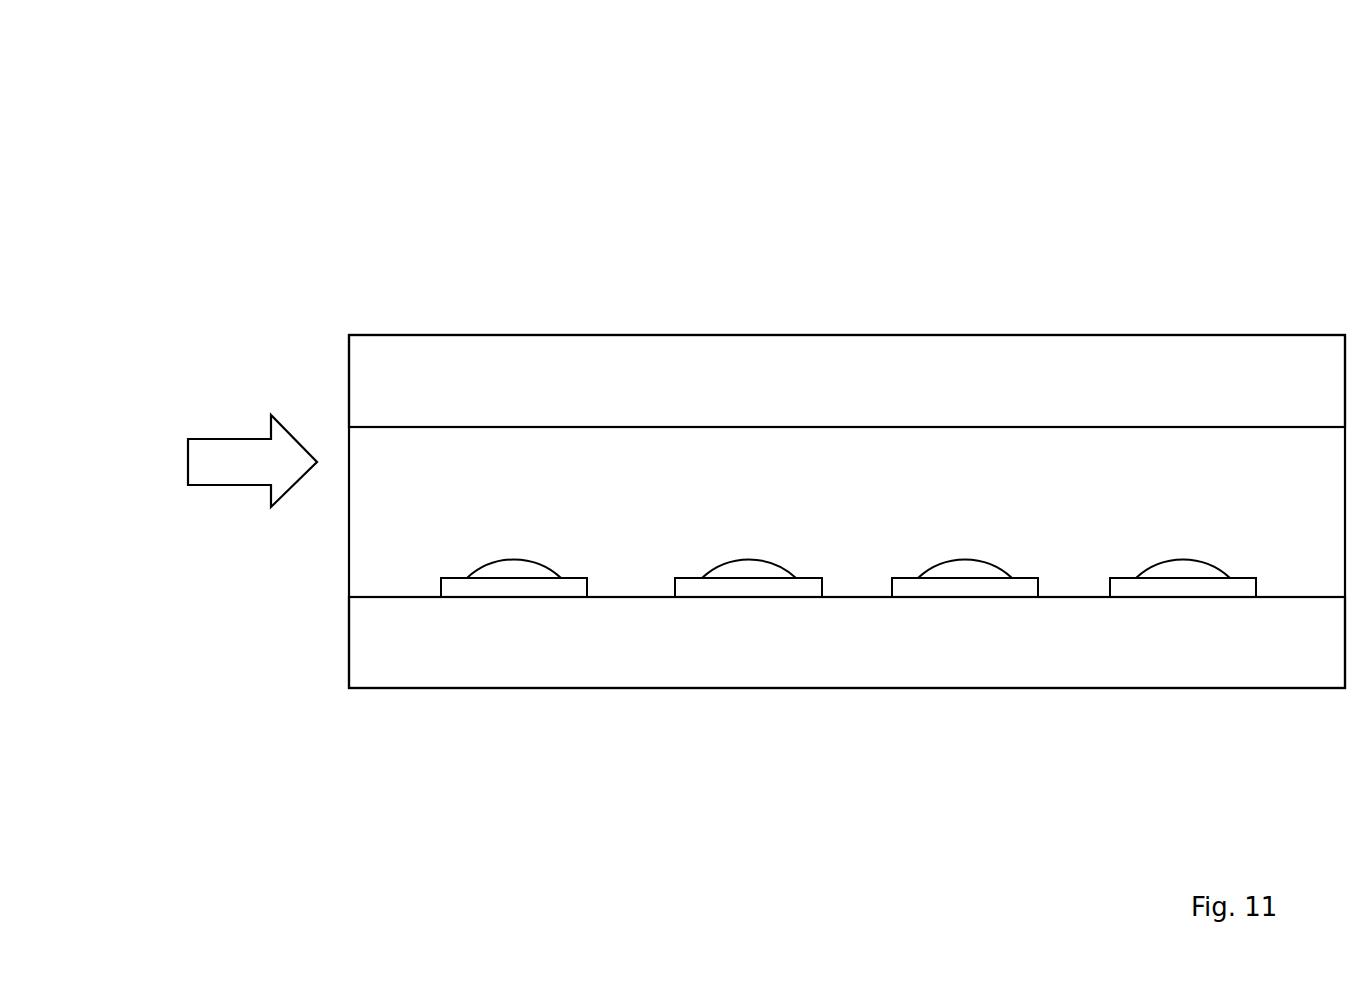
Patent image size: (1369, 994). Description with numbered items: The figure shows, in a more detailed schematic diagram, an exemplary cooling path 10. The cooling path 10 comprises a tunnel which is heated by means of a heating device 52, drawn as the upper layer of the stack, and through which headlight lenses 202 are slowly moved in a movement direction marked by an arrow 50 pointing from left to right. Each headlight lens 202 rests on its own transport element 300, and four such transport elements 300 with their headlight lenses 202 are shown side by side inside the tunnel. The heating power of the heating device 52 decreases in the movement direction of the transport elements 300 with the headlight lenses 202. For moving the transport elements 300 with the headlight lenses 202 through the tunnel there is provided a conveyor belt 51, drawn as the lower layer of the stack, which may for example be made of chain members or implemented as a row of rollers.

The cooling path 10 is at (1108, 75).
The arrow 50 is at (245, 478).
The conveyor belt 51 is at (862, 660).
The heating device 52 is at (862, 398).
The transport element 300 is at (452, 589).
The headlight lens 202 is at (523, 571).